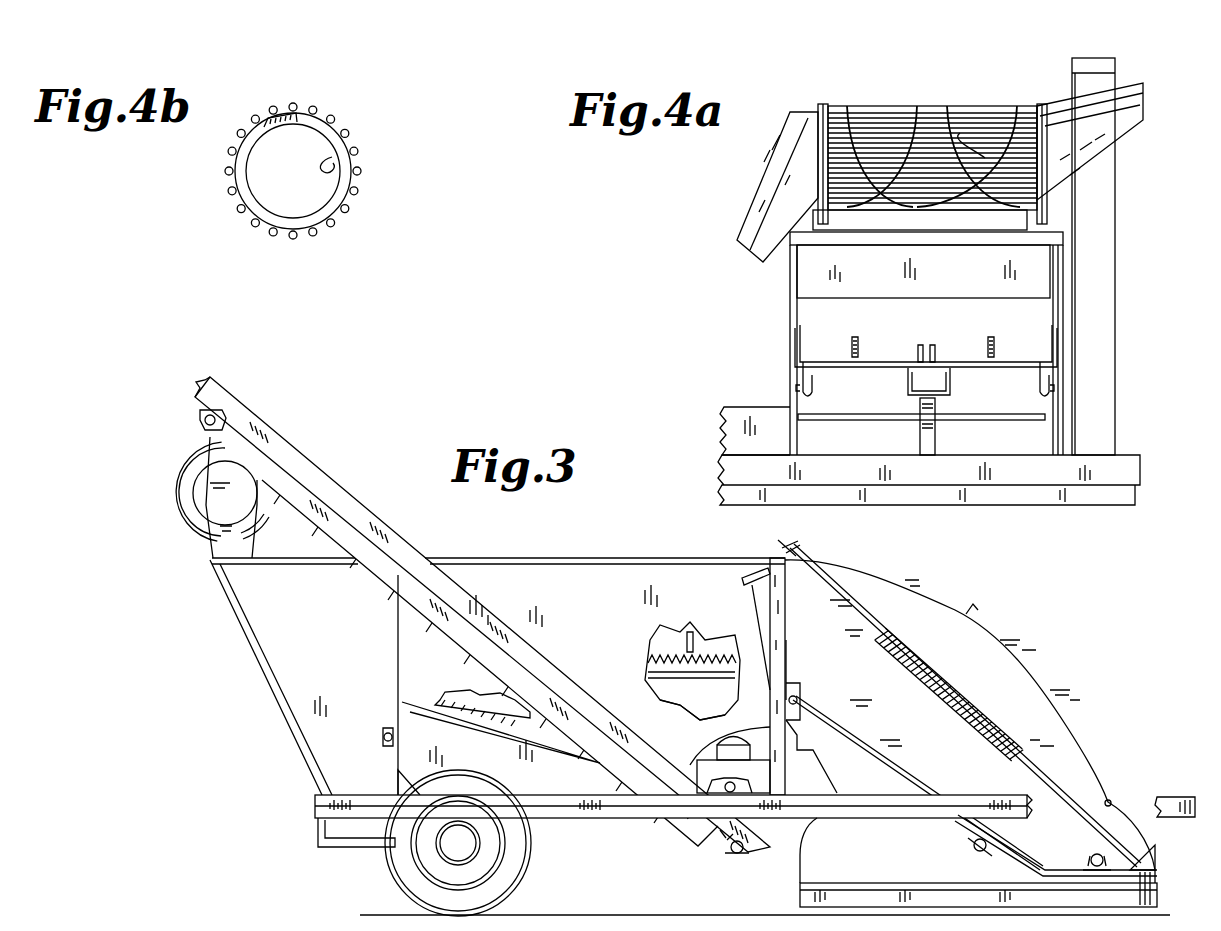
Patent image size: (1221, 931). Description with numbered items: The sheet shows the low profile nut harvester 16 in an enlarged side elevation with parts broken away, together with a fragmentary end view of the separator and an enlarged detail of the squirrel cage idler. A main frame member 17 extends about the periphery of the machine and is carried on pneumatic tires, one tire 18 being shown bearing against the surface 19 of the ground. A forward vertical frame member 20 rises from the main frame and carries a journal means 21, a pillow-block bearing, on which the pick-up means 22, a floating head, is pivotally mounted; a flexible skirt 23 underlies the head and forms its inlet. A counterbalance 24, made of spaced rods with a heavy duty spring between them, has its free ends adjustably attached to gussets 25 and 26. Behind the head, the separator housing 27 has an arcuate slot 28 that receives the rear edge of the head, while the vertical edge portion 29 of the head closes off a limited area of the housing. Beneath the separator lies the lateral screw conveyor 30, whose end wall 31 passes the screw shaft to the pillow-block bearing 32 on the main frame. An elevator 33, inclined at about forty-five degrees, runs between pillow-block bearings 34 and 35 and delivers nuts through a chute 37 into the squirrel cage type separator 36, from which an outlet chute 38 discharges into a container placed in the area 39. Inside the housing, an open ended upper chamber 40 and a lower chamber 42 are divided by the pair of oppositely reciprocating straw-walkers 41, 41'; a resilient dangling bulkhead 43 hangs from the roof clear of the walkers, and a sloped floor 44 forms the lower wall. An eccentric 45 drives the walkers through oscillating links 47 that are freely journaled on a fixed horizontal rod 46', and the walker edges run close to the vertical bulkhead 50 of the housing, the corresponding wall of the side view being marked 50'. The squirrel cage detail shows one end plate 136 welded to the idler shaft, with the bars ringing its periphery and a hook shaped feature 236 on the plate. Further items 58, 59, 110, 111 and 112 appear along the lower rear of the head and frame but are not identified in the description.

In FIG. 3, the nut harvester 16 is at (942, 566).
In FIG. 3, the main frame member 17 is at (1175, 796).
In FIG. 3, the pneumatic tire 18 is at (532, 842).
In FIG. 3, the surface of the ground 19 is at (598, 912).
In FIG. 3, the forward vertical frame member 20 is at (787, 656).
In FIG. 3, the journal means 21 is at (800, 697).
In FIG. 3, the pick-up means 22 is at (1026, 665).
In FIG. 3, the skirt 23 is at (800, 893).
In FIG. 3, the counterbalance 24 is at (874, 622).
In FIG. 3, the gusset 25 is at (1150, 866).
In FIG. 3, the gusset 26 is at (800, 548).
In FIG. 3, the separator housing 27 is at (650, 556).
In FIG. 3, the arcuate slot 28 is at (740, 579).
In FIG. 3, the vertical edge portion 29 is at (754, 604).
In FIG. 3, the lateral screw conveyor 30 is at (752, 746).
In FIG. 3, the end wall 31 is at (765, 780).
In FIG. 3, the pillow-block bearing 32 is at (727, 783).
In FIG. 4A, the elevator 33 is at (1125, 160).
In FIG. 3, the elevator 33 is at (416, 550).
In FIG. 3, the pillow-block bearing 34 is at (735, 854).
In FIG. 3, the pillow-block bearing 35 is at (204, 419).
In FIG. 4B, the squirrel cage type separator 36 is at (362, 205).
In FIG. 4A, the squirrel cage type separator 36 is at (852, 104).
In FIG. 3, the squirrel cage type separator 36 is at (174, 482).
In FIG. 4A, the chute 37 is at (1130, 86).
In FIG. 3, the chute 37 is at (212, 503).
In FIG. 4A, the outlet chute 38 is at (770, 153).
In FIG. 4A, the container area 39 is at (752, 406).
In FIG. 4A, the upper chamber 40 is at (957, 312).
In FIG. 3, the upper chamber 40 is at (708, 654).
In FIG. 4A, the straw-walkers 41 is at (856, 360).
In FIG. 3, the straw-walkers 41 is at (667, 682).
In FIG. 4A, the bar 41' is at (1005, 355).
In FIG. 3, the lower chamber 42 is at (696, 684).
In FIG. 4A, the resilient dangling bulkhead 43 is at (985, 291).
In FIG. 3, the resilient dangling bulkhead 43 is at (662, 651).
In FIG. 3, the sloped floor 44 is at (497, 722).
In FIG. 4A, the eccentric 45 is at (935, 404).
In FIG. 4A, the fixed horizontal rod 46' is at (880, 426).
In FIG. 4A, the oscillating links 47 is at (805, 415).
In FIG. 4A, the vertical bulkhead 50 is at (899, 343).
In FIG. 3, the hopper 50' is at (497, 658).
In FIG. 3, the roller 58 is at (1090, 856).
In FIG. 3, the roller 59 is at (972, 849).
In FIG. 3, the rod 110 is at (874, 754).
In FIG. 3, the pin 111 is at (1115, 800).
In FIG. 3, the curved wall 112 is at (805, 862).
In FIG. 4B, the end plate 136 is at (322, 122).
In FIG. 4B, the hook 236 is at (334, 160).
In FIG. 4A, the hook 236 is at (960, 133).